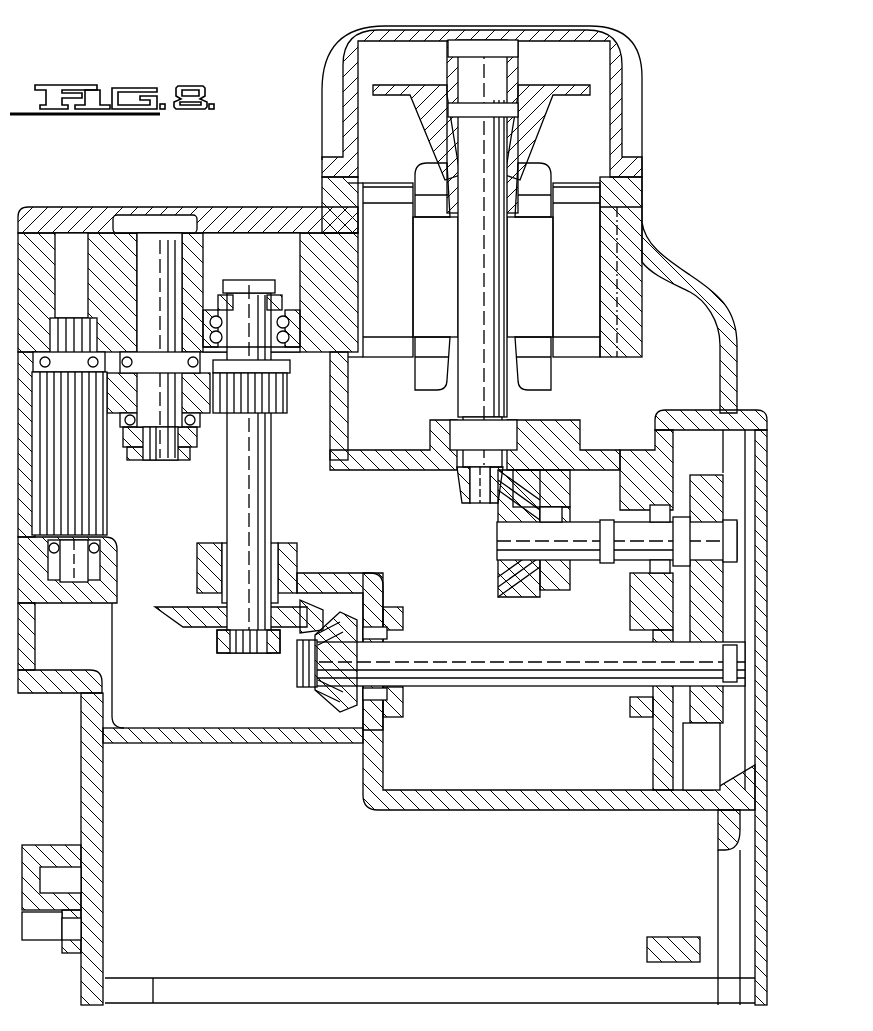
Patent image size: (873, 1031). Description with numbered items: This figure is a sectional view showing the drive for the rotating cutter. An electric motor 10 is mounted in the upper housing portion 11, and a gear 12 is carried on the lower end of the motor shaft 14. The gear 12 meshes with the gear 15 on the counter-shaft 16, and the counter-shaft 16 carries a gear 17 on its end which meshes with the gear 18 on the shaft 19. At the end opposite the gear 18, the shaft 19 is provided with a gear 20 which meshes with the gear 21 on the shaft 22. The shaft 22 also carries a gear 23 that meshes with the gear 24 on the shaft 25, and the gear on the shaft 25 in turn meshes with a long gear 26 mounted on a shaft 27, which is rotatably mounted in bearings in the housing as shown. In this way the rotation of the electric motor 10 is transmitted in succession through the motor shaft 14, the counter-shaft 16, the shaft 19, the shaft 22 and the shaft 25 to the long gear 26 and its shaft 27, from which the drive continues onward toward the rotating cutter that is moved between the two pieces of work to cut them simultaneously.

The electric motor 10 is at (537, 243).
The upper housing portion 11 is at (617, 138).
The gear 12 is at (463, 490).
The motor shaft 14 is at (493, 293).
The gear 15 is at (503, 607).
The counter-shaft 16 is at (622, 548).
The gear 17 is at (700, 483).
The gear 18 is at (705, 707).
The shaft 19 is at (513, 672).
The gear 20 is at (315, 697).
The gear 21 is at (197, 628).
The shaft 22 is at (265, 494).
The gear 23 is at (292, 390).
The gear 24 is at (207, 415).
The shaft 25 is at (163, 460).
The long gear 26 is at (100, 520).
The shaft 27 is at (78, 567).